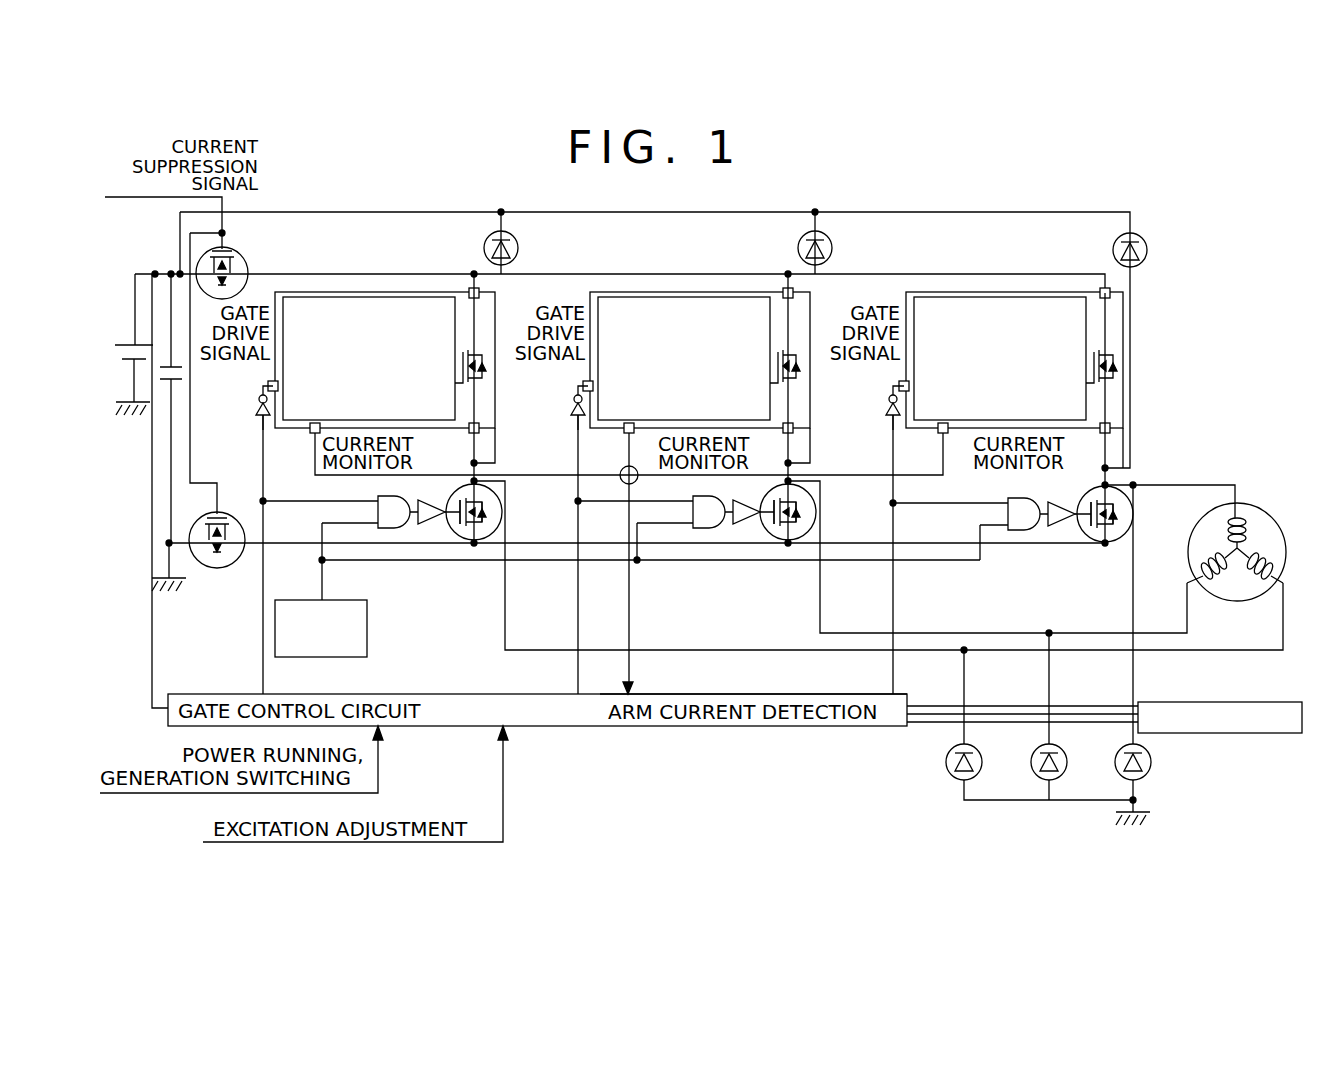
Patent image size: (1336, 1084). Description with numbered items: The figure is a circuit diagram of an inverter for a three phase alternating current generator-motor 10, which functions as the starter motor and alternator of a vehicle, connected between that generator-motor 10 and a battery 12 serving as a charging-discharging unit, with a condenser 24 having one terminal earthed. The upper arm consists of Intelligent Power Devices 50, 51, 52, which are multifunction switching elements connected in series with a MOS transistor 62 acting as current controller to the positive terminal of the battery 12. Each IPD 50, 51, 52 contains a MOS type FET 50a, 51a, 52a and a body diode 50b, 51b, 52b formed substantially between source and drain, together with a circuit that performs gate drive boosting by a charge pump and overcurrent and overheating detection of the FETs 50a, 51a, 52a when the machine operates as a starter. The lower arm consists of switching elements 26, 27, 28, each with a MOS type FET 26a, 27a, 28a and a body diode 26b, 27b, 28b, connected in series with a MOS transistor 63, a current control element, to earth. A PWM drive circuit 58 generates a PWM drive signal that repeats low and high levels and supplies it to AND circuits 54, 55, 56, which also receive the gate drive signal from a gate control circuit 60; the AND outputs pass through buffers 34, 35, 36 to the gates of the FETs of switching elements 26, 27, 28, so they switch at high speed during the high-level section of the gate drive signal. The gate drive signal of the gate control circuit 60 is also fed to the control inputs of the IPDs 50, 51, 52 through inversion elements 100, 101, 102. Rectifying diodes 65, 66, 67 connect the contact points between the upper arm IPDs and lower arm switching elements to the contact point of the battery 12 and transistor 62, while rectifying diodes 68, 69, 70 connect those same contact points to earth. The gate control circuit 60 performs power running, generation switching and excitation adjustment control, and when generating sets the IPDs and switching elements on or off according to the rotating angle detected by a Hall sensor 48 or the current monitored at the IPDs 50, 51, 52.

The three phase alternating current generator-motor 10 is at (1265, 505).
The battery 12 is at (125, 344).
The condenser 24 is at (165, 366).
The lower arm switching element 26 is at (490, 480).
The MOS type FET 26a is at (462, 532).
The body diode 26b is at (498, 525).
The lower arm switching element 27 is at (805, 480).
The MOS type FET 27a is at (776, 532).
The body diode 27b is at (812, 525).
The lower arm switching element 28 is at (1115, 487).
The MOS type FET 28a is at (1093, 534).
The body diode 28b is at (1128, 527).
The buffer 34 is at (410, 527).
The buffer 35 is at (725, 527).
The buffer 36 is at (1040, 530).
The Hall sensor 48 is at (1222, 736).
The Intelligent Power Device 50 is at (381, 341).
The MOS type FET 50a is at (466, 290).
The body diode 50b is at (486, 288).
The Intelligent Power Device 51 is at (696, 344).
The MOS type FET 51a is at (780, 290).
The body diode 51b is at (800, 288).
The Intelligent Power Device 52 is at (1011, 345).
The MOS type FET 52a is at (1097, 290).
The body diode 52b is at (1115, 288).
The AND circuit 54 is at (377, 498).
The AND circuit 55 is at (692, 499).
The AND circuit 56 is at (1007, 501).
The PWM drive circuit 58 is at (367, 628).
The gate control circuit 60 is at (725, 728).
The MOS transistor 62 is at (248, 268).
The MOS transistor 63 is at (217, 569).
The rectifying diode 65 is at (509, 233).
The rectifying diode 66 is at (822, 233).
The rectifying diode 67 is at (1140, 236).
The rectifying diode 68 is at (962, 781).
The rectifying diode 69 is at (1047, 781).
The rectifying diode 70 is at (1131, 781).
The inversion element 100 is at (262, 418).
The inversion element 101 is at (578, 418).
The inversion element 102 is at (893, 418).